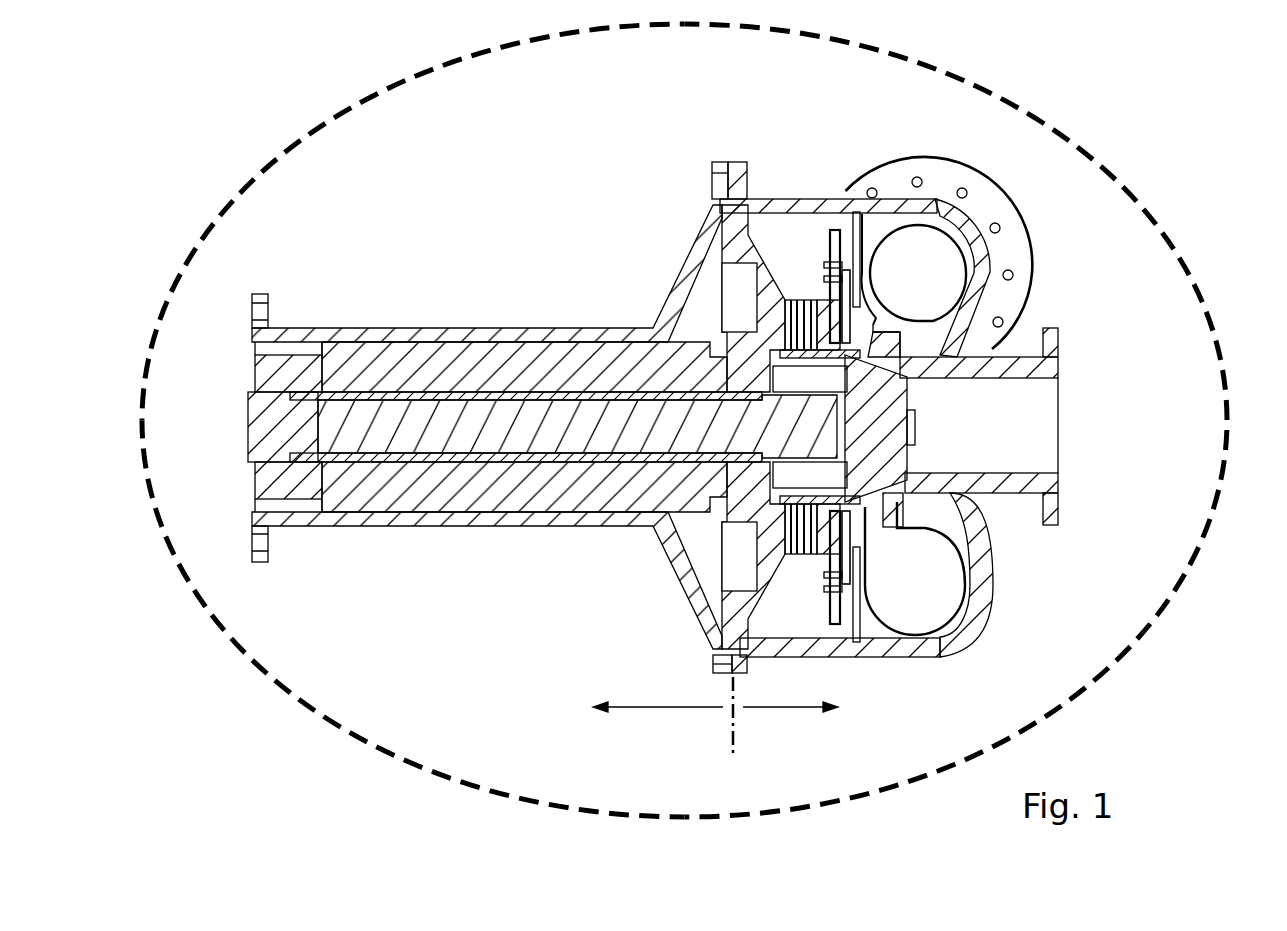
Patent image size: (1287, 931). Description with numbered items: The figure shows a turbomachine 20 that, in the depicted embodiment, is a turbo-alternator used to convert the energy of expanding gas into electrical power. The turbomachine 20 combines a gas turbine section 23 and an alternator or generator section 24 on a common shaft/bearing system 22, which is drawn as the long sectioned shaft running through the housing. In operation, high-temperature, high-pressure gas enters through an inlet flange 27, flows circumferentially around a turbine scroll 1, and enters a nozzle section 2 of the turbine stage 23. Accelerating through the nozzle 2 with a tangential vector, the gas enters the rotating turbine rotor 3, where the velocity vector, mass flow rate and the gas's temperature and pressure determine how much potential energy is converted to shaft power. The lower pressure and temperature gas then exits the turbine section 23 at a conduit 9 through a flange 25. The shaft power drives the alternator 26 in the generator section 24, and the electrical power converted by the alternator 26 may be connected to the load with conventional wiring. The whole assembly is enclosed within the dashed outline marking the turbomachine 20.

The turbine scroll 1 is at (945, 258).
The nozzle section 2 is at (868, 332).
The turbine rotor 3 is at (993, 498).
The conduit 9 is at (1000, 413).
The turbomachine 20 is at (300, 132).
The common shaft/bearing system 22 is at (272, 390).
The gas turbine section 23 is at (757, 708).
The alternator or generator section 24 is at (965, 175).
The flange 25 is at (1055, 500).
The alternator 26 is at (448, 423).
The inlet flange 27 is at (655, 708).